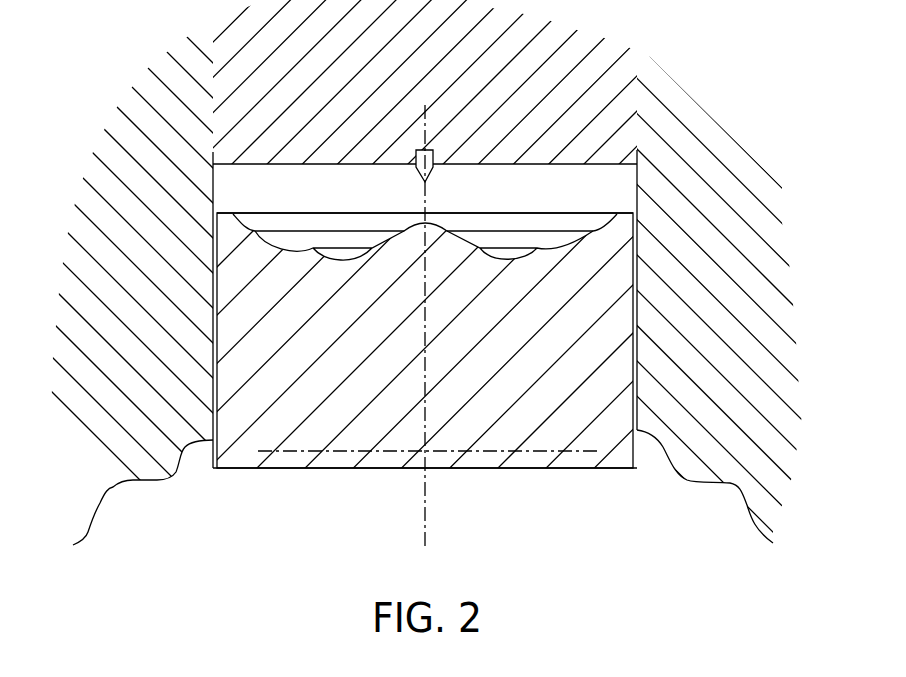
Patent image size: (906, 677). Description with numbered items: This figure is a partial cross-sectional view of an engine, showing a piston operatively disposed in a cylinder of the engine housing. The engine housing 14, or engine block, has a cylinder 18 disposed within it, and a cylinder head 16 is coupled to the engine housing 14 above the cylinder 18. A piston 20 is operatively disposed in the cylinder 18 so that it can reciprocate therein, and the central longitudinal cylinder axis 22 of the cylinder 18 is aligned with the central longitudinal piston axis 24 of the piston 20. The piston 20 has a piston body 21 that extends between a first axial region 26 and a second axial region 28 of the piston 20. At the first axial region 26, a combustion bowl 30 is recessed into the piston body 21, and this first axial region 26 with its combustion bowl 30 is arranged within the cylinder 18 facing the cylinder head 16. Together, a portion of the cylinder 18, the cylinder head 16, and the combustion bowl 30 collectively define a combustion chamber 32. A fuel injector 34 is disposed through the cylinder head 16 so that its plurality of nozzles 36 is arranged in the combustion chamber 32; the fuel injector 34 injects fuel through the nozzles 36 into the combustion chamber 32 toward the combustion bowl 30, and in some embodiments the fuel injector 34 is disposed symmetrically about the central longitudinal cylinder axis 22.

The engine housing 14 is at (453, 300).
The cylinder head 16 is at (513, 42).
The cylinder 18 is at (634, 192).
The piston 20 is at (288, 458).
The piston body 21 is at (220, 278).
The central longitudinal cylinder axis 22 is at (428, 130).
The central longitudinal piston axis 24 is at (425, 409).
The first axial region 26 is at (218, 232).
The second axial region 28 is at (585, 476).
The combustion bowl 30 is at (291, 225).
The combustion chamber 32 is at (372, 203).
The fuel injector 34 is at (415, 156).
The nozzles 36 is at (425, 182).